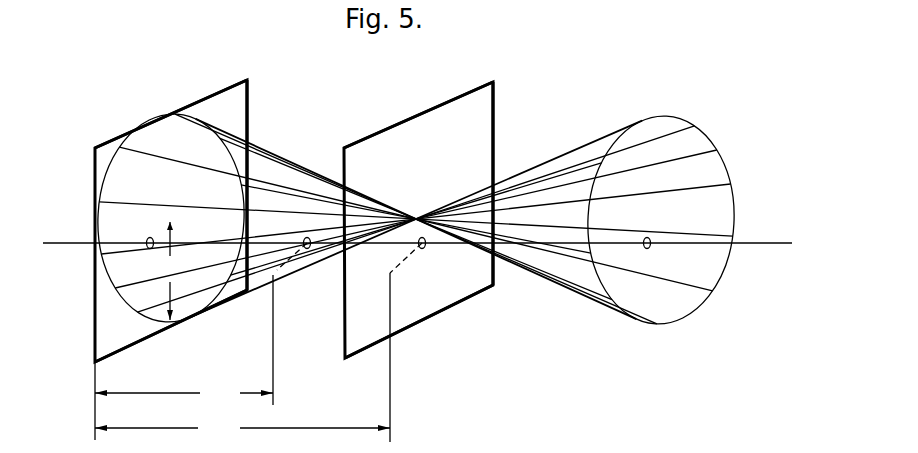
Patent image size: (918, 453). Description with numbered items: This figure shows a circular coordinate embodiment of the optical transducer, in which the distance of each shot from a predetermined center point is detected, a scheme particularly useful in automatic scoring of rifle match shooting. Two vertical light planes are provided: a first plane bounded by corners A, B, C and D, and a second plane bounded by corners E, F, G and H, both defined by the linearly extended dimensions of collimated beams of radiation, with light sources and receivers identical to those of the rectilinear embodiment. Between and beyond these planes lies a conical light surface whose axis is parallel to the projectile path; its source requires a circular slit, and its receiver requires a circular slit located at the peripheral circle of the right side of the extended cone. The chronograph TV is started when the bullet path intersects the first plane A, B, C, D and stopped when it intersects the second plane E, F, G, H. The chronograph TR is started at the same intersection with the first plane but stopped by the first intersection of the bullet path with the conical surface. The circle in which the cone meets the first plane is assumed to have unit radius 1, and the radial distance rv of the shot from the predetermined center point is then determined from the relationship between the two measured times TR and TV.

The corner A of vertical plane ABCD A is at (163, 232).
The corner B of vertical plane ABCD B is at (163, 114).
The corner C of vertical plane ABCD C is at (253, 175).
The corner D of vertical plane ABCD D is at (177, 326).
The corner E of vertical plane EFGH E is at (416, 231).
The corner F of vertical plane EFGH F is at (412, 115).
The corner G of vertical plane EFGH G is at (502, 172).
The corner H of vertical plane EFGH H is at (425, 321).
The radius from predetermined center point rv is at (162, 222).
The unit radius 1 is at (168, 271).
The chronograph Tr TR is at (184, 357).
The chronograph Tv TV is at (242, 357).